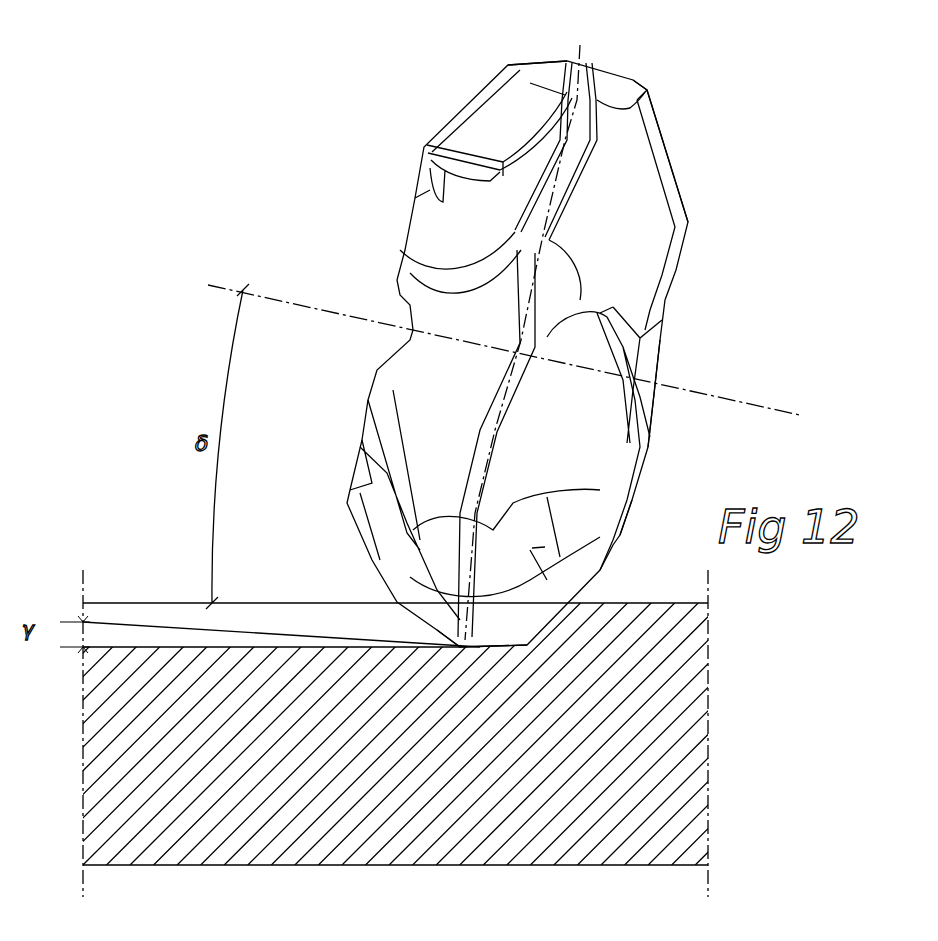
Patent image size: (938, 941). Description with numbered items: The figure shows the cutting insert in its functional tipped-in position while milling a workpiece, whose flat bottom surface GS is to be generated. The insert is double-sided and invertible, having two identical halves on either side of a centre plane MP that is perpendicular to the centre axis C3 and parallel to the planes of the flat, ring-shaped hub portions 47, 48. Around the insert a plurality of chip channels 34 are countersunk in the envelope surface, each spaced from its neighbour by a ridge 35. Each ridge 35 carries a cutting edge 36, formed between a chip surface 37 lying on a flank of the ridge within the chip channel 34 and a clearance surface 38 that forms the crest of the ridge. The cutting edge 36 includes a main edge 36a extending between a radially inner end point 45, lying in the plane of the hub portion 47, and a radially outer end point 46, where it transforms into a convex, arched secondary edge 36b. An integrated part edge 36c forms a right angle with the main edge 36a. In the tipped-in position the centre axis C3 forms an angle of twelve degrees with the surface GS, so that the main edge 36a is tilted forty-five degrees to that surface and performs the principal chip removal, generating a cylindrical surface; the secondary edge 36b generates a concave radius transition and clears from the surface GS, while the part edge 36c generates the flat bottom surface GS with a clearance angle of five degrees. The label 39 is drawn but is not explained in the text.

The chip channel 34 is at (640, 162).
The ridge 35 is at (615, 307).
The cutting edge 36 is at (492, 102).
The main edge 36a is at (478, 95).
The secondary edge 36b is at (508, 64).
The part edge 36c is at (497, 650).
The chip surface 37 is at (638, 452).
The clearance surface 38 is at (650, 373).
The chip face 39 is at (627, 208).
The inner end point 45 is at (690, 222).
The outer end point 46 is at (653, 100).
The hub portion 47 is at (662, 360).
The hub portion 48 is at (368, 402).
The centre plane MP is at (531, 329).
The centre axis C3 is at (332, 310).
The flat surface GS is at (146, 647).